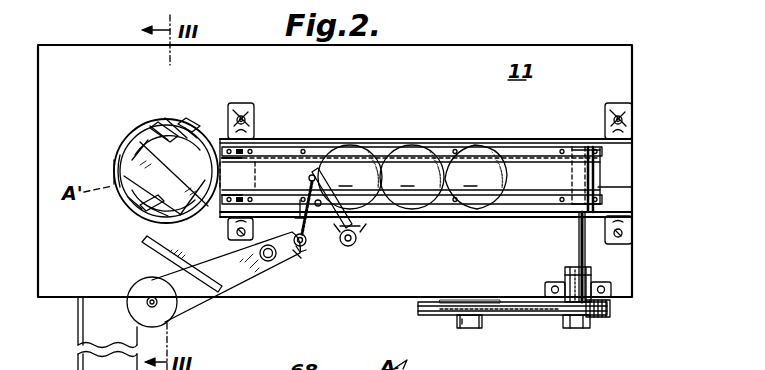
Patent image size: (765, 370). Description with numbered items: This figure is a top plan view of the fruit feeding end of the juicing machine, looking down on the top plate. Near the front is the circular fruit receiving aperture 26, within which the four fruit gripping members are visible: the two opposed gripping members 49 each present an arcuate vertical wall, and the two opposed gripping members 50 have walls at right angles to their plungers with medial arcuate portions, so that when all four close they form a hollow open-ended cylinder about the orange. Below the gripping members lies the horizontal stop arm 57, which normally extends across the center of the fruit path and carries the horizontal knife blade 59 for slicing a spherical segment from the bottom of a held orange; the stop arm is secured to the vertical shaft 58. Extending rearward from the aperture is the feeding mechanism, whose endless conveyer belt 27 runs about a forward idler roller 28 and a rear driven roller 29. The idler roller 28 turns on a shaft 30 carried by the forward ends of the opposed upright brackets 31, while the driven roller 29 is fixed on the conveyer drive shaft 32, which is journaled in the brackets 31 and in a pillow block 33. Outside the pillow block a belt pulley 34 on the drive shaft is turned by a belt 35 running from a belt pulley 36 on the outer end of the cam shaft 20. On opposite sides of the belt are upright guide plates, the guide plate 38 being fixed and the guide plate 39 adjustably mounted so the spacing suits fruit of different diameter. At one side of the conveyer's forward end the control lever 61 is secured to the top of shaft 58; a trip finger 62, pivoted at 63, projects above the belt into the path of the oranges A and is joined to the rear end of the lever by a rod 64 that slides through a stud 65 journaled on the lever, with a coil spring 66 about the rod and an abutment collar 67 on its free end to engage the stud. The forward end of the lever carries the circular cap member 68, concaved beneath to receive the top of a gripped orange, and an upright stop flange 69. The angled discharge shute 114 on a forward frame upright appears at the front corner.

The cam shaft 20 is at (475, 320).
The fruit receiving aperture 26 is at (114, 165).
The conveyer belt 27 is at (544, 188).
The idler roller 28 is at (250, 164).
The driven roller 29 is at (632, 187).
The shaft 30 is at (252, 154).
The brackets 31 is at (534, 150).
The conveyer drive shaft 32 is at (580, 249).
The pillow block 33 is at (570, 286).
The belt pulley 34 is at (604, 316).
The belt 35 is at (530, 314).
The belt pulley 36 is at (436, 314).
The guide plate 38 is at (430, 210).
The guide plate 39 is at (401, 139).
The gripping members 49 is at (186, 130).
The gripping members 50 is at (150, 130).
The stop arm 57 is at (180, 186).
The vertical shaft 58 is at (268, 258).
The knife blade 59 is at (148, 200).
The control lever 61 is at (232, 282).
The trip finger 62 is at (310, 178).
The pivot 63 is at (352, 244).
The rod 64 is at (294, 256).
The stud 65 is at (306, 244).
The coil spring 66 is at (304, 224).
The abutment collar 67 is at (304, 254).
The cap member 68 is at (170, 314).
The stop flange 69 is at (162, 256).
The shute 114 is at (90, 322).
The oranges A is at (412, 177).